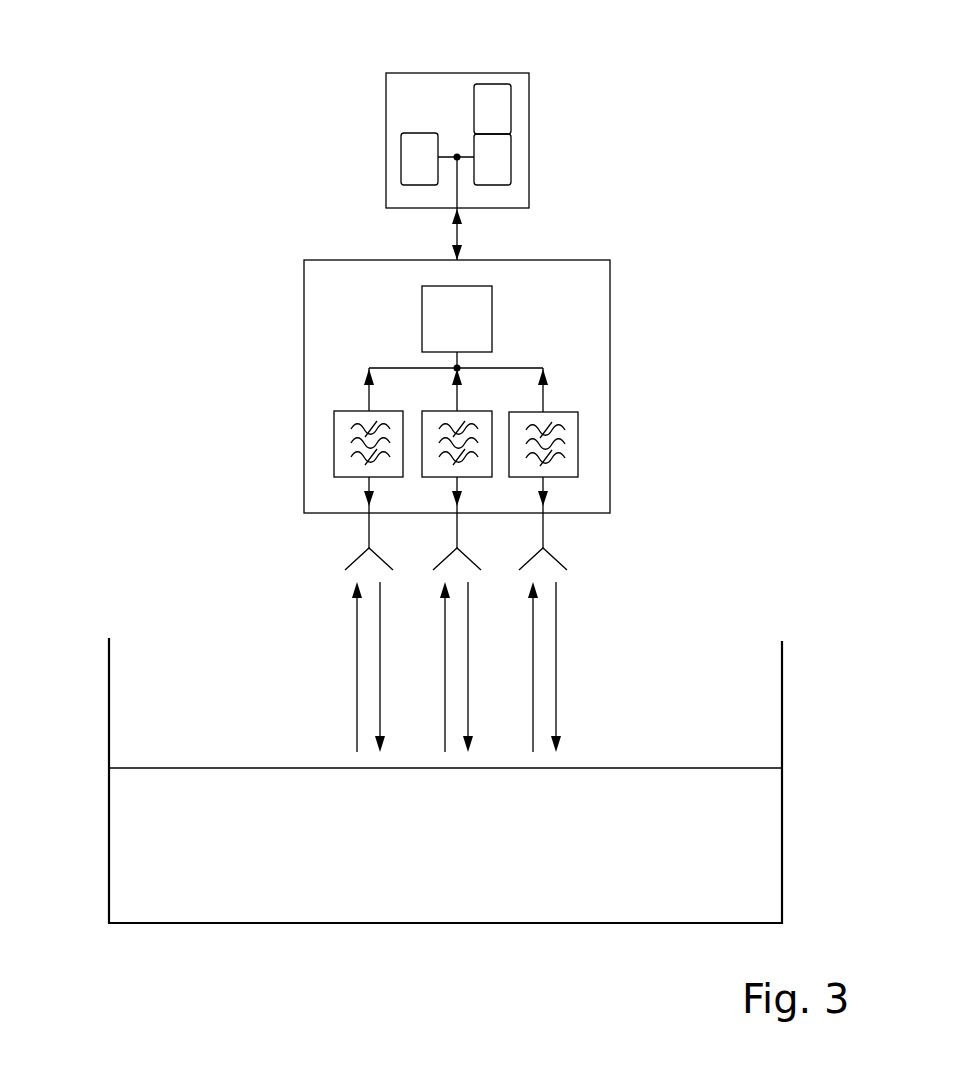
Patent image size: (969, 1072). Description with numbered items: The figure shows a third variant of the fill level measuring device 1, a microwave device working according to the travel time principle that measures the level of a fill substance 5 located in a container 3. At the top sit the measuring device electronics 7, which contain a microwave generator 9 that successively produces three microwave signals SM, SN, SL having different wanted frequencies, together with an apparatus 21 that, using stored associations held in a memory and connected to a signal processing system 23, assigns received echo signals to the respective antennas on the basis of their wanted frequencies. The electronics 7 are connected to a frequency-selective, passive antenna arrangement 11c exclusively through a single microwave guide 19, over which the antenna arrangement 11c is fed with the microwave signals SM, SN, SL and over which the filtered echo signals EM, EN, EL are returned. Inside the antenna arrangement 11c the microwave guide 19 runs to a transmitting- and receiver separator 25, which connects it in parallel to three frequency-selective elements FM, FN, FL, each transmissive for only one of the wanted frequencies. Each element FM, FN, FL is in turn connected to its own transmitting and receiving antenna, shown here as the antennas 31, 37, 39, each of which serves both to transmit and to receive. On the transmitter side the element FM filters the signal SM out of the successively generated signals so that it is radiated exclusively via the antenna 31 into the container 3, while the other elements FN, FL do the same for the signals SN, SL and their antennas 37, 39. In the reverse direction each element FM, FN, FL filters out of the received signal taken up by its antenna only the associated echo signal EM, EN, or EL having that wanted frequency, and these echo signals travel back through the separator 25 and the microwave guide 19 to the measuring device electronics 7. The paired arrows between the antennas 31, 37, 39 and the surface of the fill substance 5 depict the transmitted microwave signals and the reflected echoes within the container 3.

The fill level measuring device 1 is at (240, 102).
The measuring device electronics 7 is at (386, 118).
The microwave generator 9 is at (419, 159).
The signal processing system 23 is at (492, 109).
The apparatus 21 is at (492, 159).
The microwave guide 19 is at (457, 240).
The antenna arrangement 11c is at (592, 285).
The transmitting- and receiver separator 25 is at (457, 319).
The echo signal EM is at (369, 397).
The echo signal EN is at (457, 402).
The echo signal EL is at (543, 400).
The frequency-selective element FM is at (334, 443).
The frequency-selective element FN is at (480, 477).
The frequency-selective element FL is at (578, 440).
The microwave signal SM is at (369, 481).
The microwave signal SN is at (457, 483).
The microwave signal SL is at (545, 483).
The transmitting and receiving antenna 31 is at (356, 558).
The antenna 37 is at (447, 555).
The antenna 39 is at (556, 552).
The container 3 is at (109, 688).
The fill substance 5 is at (445, 813).